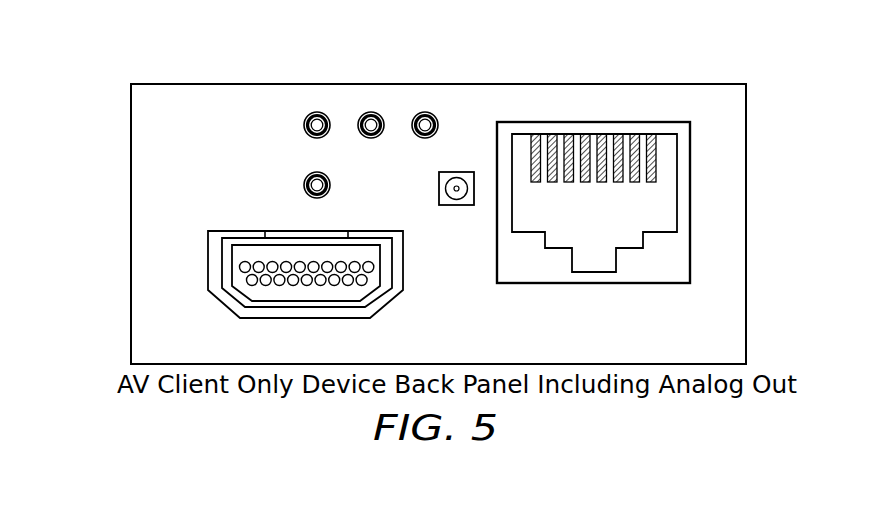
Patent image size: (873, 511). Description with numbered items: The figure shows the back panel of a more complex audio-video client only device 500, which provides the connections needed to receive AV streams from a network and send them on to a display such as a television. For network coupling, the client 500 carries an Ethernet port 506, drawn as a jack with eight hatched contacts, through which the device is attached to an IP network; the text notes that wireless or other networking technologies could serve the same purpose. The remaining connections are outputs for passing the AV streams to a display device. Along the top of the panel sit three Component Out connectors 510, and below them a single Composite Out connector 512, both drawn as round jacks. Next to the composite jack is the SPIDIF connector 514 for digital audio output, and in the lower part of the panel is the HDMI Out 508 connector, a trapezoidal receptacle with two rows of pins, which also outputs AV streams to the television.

The AV client only device 500 is at (129, 257).
The Ethernet port 506 is at (681, 186).
The HDMI Out 508 is at (212, 275).
The Component Out connectors 510 is at (147, 108).
The Composite Out connectors 512 is at (160, 175).
The SPIDIF connector 514 is at (458, 172).